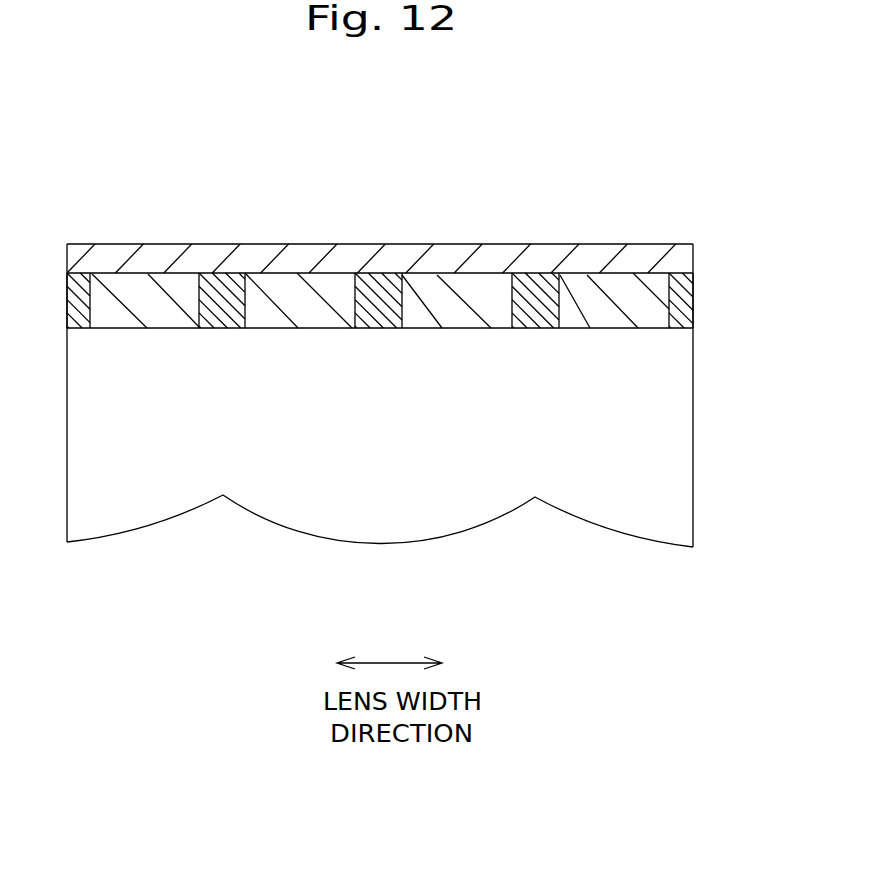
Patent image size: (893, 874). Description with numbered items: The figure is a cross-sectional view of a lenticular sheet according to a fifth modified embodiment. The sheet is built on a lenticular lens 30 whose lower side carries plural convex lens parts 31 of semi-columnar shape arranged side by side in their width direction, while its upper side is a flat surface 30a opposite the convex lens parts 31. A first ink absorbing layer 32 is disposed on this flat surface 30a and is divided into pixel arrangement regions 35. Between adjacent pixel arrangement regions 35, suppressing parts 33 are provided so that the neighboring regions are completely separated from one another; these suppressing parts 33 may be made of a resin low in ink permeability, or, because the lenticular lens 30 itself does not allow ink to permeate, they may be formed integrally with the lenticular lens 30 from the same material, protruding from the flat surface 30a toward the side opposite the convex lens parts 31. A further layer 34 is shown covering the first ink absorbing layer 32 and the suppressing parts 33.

The lenticular lens 30 is at (660, 393).
The flat surface 30a is at (147, 322).
The convex lens parts 31 is at (468, 487).
The first ink absorbing layer 32 is at (643, 307).
The suppressing part 33 is at (382, 292).
The cover layer 34 is at (680, 258).
The pixel arrangement regions 35 is at (440, 312).